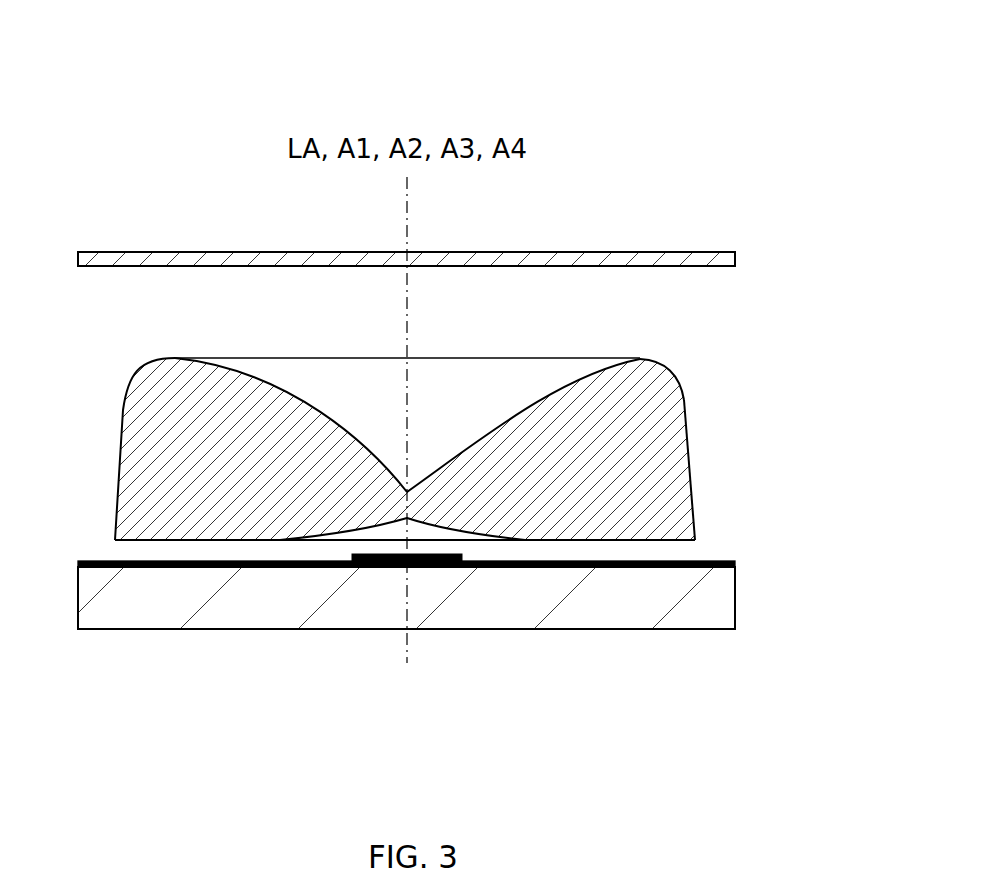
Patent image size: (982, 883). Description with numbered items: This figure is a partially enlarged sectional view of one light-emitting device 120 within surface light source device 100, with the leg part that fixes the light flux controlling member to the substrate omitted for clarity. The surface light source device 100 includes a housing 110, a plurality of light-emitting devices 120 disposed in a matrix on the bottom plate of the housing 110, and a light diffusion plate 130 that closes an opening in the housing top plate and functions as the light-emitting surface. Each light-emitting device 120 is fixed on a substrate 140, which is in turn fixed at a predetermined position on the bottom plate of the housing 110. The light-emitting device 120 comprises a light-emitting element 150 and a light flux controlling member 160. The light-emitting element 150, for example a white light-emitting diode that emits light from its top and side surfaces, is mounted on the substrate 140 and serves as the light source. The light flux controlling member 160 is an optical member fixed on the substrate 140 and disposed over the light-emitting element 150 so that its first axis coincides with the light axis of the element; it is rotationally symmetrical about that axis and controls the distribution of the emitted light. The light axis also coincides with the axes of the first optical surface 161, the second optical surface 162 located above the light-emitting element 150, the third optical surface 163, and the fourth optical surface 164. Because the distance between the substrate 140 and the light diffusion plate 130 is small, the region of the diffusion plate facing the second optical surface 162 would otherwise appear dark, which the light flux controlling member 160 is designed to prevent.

The surface light source device 100 is at (727, 102).
The housing 110 is at (123, 617).
The light-emitting device 120 is at (459, 489).
The light diffusion plate 130 is at (232, 257).
The substrate 140 is at (308, 561).
The light-emitting element 150 is at (400, 567).
The light flux controlling member 160 is at (232, 355).
The first optical surface 161 is at (435, 532).
The second optical surface 162 is at (520, 394).
The third optical surface 163 is at (688, 417).
The fourth optical surface 164 is at (643, 542).